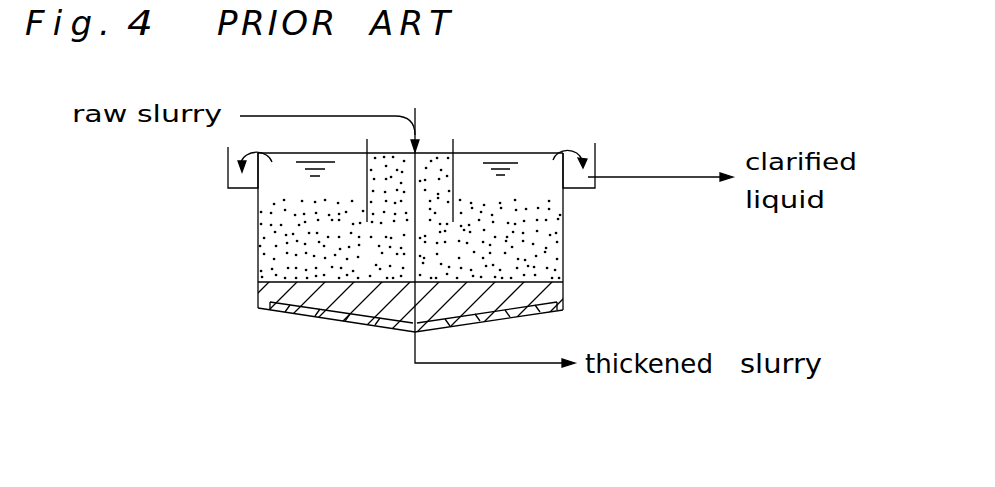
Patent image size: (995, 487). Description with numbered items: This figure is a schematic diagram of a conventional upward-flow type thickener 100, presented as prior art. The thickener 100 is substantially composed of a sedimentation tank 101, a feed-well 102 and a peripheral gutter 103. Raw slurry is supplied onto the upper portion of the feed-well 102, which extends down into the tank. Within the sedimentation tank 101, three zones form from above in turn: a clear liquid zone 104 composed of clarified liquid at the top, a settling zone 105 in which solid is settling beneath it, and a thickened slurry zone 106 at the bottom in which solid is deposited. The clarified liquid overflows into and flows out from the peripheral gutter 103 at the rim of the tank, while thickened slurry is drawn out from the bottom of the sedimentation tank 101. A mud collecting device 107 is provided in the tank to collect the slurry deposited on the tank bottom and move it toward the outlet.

The upward-flow type thickener 100 is at (228, 206).
The sedimentation tank 101 is at (258, 250).
The feed-well 102 is at (455, 140).
The peripheral gutter 103 is at (597, 157).
The clear liquid zone 104 is at (523, 178).
The settling zone 105 is at (532, 240).
The thickened slurry zone 106 is at (520, 298).
The mud collecting device 107 is at (310, 312).